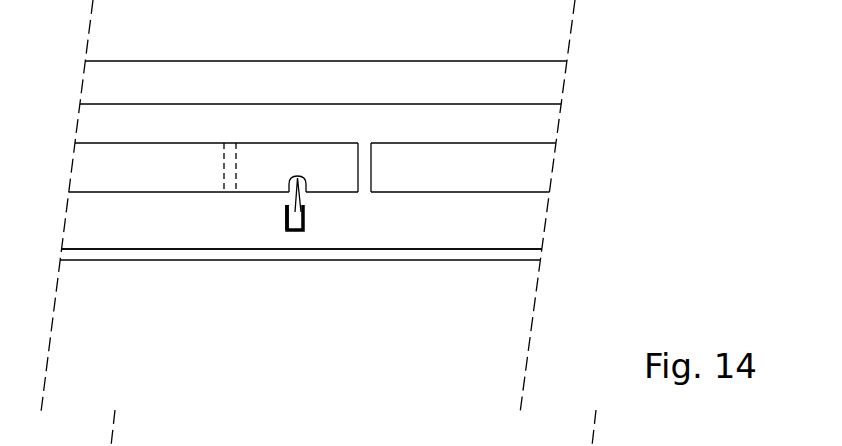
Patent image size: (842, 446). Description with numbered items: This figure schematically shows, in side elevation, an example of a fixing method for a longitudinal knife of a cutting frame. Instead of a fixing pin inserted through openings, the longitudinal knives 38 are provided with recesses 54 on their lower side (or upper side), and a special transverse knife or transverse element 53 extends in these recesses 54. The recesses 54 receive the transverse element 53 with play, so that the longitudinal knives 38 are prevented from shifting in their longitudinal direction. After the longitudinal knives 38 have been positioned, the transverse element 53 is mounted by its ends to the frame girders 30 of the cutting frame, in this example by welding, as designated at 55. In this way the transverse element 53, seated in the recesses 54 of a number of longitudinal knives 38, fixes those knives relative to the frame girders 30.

The frame girder 30 is at (512, 221).
The longitudinal knife 38 is at (190, 147).
The transverse element 53 is at (305, 212).
The recess 54 is at (286, 199).
The welding 55 is at (288, 208).